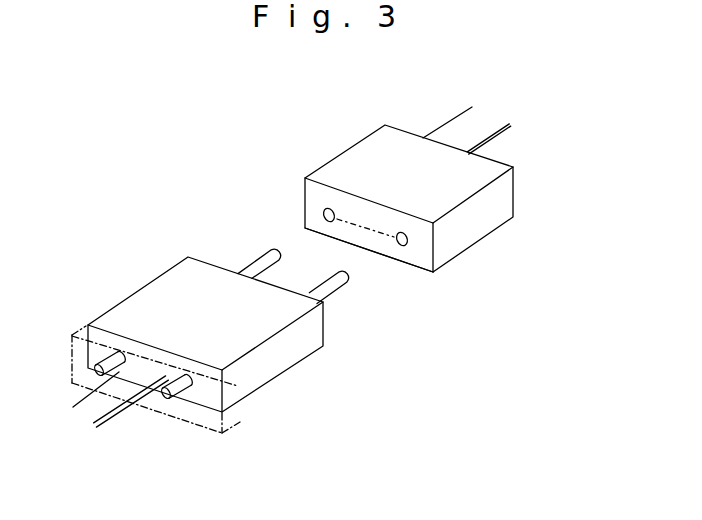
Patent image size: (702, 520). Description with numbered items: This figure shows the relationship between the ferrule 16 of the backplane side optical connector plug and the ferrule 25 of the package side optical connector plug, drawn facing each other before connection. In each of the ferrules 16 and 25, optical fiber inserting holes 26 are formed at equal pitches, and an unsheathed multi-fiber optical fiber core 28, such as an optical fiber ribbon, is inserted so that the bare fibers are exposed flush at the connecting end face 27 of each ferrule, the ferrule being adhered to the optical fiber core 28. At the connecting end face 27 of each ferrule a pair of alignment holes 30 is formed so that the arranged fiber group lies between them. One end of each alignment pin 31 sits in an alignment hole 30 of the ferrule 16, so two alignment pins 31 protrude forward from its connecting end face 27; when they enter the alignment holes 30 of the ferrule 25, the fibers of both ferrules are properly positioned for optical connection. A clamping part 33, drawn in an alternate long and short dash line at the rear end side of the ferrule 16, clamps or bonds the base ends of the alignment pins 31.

The ferrule 16 is at (237, 330).
The ferrule 25 is at (472, 230).
The optical fiber inserting holes 26 is at (370, 228).
The connecting end face 27 is at (415, 263).
The optical fiber core 28 is at (513, 128).
The alignment holes 30 is at (323, 212).
The alignment pins 31 is at (250, 252).
The clamping part 33 is at (238, 423).